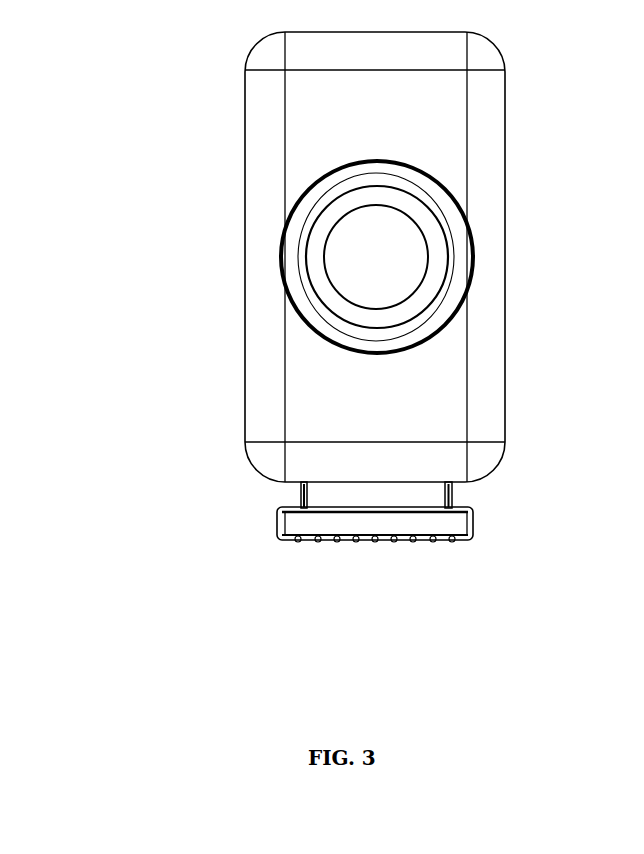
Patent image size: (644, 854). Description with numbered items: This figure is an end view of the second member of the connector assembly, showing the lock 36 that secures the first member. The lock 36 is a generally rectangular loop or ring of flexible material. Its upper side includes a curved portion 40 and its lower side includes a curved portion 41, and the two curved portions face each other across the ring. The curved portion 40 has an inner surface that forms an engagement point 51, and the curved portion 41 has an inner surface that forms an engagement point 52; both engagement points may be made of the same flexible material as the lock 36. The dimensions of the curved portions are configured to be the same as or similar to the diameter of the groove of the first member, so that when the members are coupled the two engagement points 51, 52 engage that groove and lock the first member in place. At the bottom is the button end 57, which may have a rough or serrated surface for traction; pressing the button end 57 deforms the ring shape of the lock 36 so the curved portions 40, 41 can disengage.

The lock 36 is at (329, 497).
The curved portion 40 is at (464, 227).
The curved portion 41 is at (284, 244).
The engagement point 51 is at (456, 262).
The engagement point 52 is at (289, 270).
The button end 57 is at (366, 545).